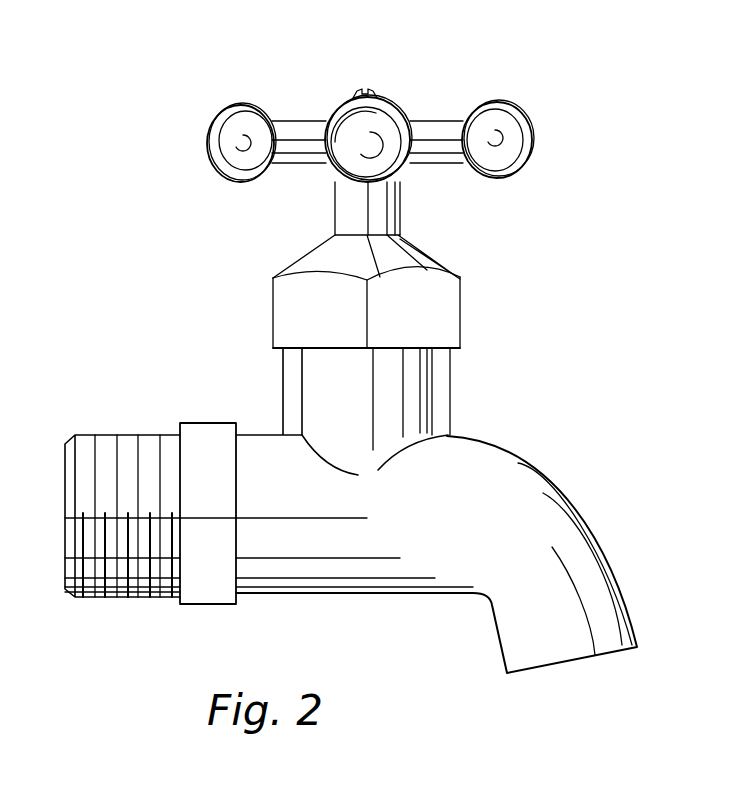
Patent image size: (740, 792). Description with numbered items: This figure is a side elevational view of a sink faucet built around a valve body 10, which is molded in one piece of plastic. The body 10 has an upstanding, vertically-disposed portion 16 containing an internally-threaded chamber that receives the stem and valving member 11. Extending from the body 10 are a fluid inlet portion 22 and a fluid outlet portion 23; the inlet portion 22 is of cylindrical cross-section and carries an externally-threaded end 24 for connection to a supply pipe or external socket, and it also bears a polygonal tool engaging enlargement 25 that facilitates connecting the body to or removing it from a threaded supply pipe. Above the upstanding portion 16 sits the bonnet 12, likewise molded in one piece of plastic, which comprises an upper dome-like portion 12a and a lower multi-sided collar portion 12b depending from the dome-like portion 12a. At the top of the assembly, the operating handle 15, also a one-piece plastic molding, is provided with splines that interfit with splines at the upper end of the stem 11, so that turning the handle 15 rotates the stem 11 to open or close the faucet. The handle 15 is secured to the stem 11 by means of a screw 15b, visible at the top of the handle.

The valve body 10 is at (517, 448).
The stem and valving member 11 is at (400, 218).
The bonnet 12 is at (468, 308).
The upper dome-like portion 12a is at (447, 262).
The lower multi-sided collar portion 12b is at (463, 334).
The operating handle 15 is at (532, 128).
The screw 15b is at (375, 86).
The upstanding portion 16 is at (413, 388).
The fluid inlet portion 22 is at (256, 430).
The fluid outlet portion 23 is at (465, 433).
The externally-threaded end 24 is at (102, 447).
The polygonal tool engaging enlargement 25 is at (197, 438).